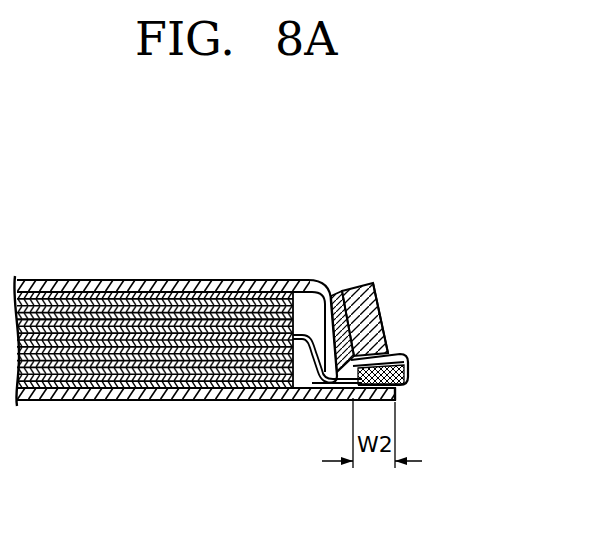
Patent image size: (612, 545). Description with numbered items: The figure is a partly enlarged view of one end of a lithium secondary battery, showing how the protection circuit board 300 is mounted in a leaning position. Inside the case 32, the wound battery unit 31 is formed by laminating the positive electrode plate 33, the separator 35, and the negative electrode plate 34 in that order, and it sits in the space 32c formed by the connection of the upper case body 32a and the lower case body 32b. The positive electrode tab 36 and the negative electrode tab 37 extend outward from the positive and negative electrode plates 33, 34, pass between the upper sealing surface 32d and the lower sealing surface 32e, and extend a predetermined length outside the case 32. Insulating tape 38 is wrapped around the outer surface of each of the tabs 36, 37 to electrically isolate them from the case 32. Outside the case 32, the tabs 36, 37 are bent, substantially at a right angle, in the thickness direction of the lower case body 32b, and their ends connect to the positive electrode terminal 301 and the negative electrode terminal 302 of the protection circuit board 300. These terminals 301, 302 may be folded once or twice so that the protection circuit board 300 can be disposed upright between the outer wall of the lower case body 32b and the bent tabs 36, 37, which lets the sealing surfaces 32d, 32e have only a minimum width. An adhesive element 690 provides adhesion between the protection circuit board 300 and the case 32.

The case 32 is at (117, 430).
The upper case body 32a is at (187, 391).
The lower case body 32b is at (57, 280).
The space 32c is at (303, 300).
The upper sealing surface 32d is at (372, 399).
The lower sealing surface 32e is at (390, 346).
The wound battery unit 31 is at (213, 222).
The positive electrode plate 33 is at (174, 292).
The negative electrode plate 34 is at (212, 300).
The separator 35 is at (135, 292).
The positive electrode tab 36 is at (312, 382).
The negative electrode tab 37 is at (327, 361).
The insulating tape 38 is at (405, 380).
The protection circuit board 300 is at (367, 299).
The positive electrode terminal 301 is at (406, 360).
The negative electrode terminal 302 is at (378, 364).
The adhesive element 690 is at (333, 290).